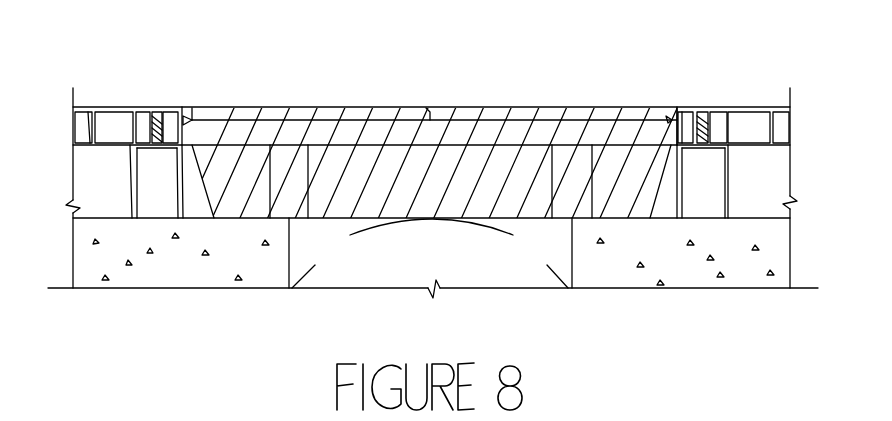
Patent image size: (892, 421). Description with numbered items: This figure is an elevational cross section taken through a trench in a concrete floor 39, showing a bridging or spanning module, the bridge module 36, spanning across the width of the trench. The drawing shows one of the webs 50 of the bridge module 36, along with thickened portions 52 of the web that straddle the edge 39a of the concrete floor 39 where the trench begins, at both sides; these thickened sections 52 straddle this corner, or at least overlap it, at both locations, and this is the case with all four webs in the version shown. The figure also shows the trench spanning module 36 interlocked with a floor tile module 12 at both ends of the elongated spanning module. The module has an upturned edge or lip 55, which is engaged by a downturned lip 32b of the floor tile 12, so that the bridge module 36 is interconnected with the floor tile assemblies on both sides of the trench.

The floor tile module 12 is at (149, 108).
The bridge module 36 is at (445, 108).
The upturned edge or lip 55 is at (672, 120).
The downturned lip 32b is at (677, 107).
The web 50 is at (650, 183).
The thickened portions of the web 52 is at (293, 192).
The concrete floor 39 is at (740, 217).
The edge of the concrete floor 39a is at (293, 218).